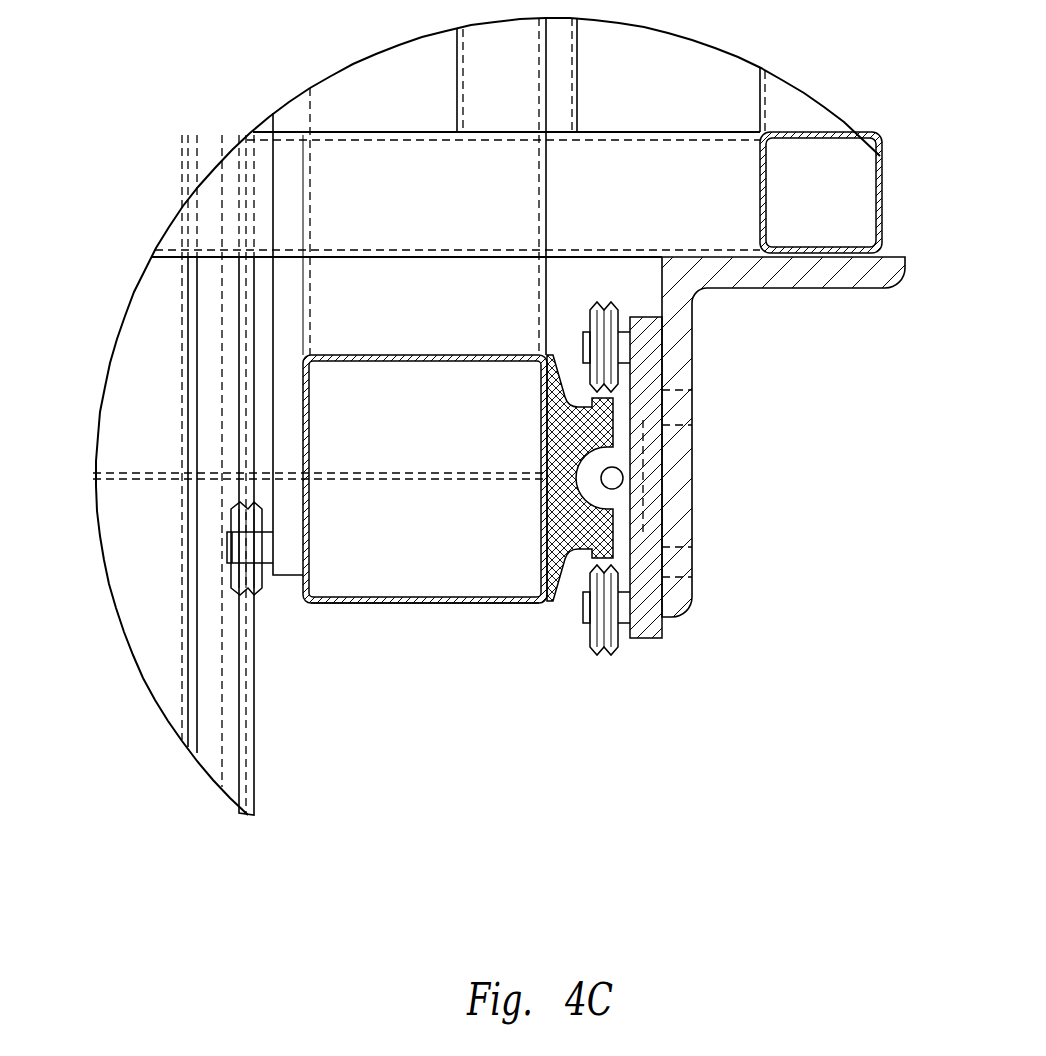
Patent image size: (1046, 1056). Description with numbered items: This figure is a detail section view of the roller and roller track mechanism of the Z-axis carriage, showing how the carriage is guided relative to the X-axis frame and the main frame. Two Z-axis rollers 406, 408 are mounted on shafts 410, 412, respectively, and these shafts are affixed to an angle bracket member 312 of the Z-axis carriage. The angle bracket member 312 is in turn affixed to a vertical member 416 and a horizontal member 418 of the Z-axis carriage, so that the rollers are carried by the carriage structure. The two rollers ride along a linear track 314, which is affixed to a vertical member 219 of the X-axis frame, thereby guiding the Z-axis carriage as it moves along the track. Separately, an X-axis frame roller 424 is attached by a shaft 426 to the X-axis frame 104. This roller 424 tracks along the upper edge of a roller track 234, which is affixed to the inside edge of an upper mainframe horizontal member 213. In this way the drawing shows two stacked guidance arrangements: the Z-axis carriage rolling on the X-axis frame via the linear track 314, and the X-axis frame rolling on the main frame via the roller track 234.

The X-axis frame 104 is at (290, 532).
The upper mainframe horizontal member 213 is at (212, 757).
The vertical member 219 is at (423, 603).
The roller track 234 is at (250, 757).
The angle bracket member 312 is at (694, 502).
The linear track 314 is at (565, 588).
The Z-axis roller 406 is at (626, 378).
The Z-axis roller 408 is at (612, 653).
The shaft 410 is at (626, 343).
The shaft 412 is at (626, 608).
The vertical member 416 is at (882, 197).
The horizontal member 418 is at (665, 132).
The X-axis frame roller 424 is at (260, 593).
The shaft 426 is at (228, 547).